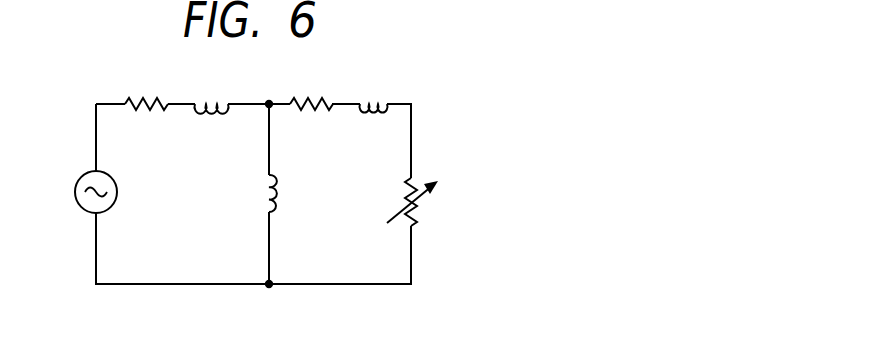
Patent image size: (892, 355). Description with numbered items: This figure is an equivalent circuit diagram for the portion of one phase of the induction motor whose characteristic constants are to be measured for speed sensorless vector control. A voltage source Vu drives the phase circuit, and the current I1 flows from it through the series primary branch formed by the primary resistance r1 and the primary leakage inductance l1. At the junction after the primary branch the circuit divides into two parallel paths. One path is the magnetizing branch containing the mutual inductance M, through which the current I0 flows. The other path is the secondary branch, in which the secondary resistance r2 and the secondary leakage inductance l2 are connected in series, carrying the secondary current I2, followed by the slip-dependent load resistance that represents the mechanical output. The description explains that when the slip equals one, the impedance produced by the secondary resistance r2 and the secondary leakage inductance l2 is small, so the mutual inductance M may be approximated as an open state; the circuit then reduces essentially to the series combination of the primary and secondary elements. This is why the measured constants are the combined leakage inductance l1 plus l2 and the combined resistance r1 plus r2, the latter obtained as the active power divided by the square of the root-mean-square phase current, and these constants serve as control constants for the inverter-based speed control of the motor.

The supply voltage source Vu is at (77, 192).
The primary resistance r1 is at (146, 89).
The primary leakage inductance l1 is at (212, 91).
The secondary resistance r2 is at (311, 89).
The secondary leakage inductance l2 is at (374, 90).
The mutual inductance M is at (256, 193).
The stator current I1 is at (196, 137).
The magnetizing current I0 is at (287, 148).
The rotor current I2 is at (432, 113).